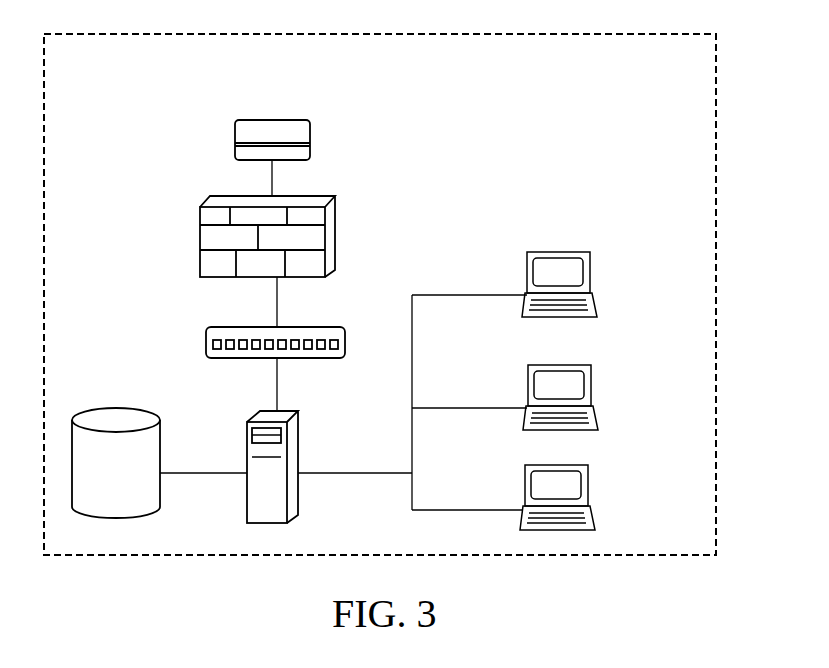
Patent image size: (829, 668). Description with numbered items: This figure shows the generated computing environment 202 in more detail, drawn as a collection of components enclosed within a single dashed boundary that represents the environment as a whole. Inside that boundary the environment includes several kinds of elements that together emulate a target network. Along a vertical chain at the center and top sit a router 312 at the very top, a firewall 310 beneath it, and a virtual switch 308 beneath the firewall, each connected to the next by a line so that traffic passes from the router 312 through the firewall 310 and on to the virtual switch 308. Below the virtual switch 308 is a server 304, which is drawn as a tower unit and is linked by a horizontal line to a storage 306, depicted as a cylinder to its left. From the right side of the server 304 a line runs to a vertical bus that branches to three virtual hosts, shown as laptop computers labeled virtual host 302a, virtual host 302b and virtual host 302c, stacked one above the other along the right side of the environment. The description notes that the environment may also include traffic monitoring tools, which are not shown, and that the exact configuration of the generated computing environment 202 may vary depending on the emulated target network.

The generated computing environment 202 is at (605, 34).
The virtual host 302a is at (593, 300).
The virtual host 302b is at (595, 410).
The virtual host 302c is at (592, 510).
The server 304 is at (300, 427).
The storage 306 is at (116, 463).
The virtual switch 308 is at (320, 327).
The firewall 310 is at (337, 243).
The router 312 is at (290, 118).